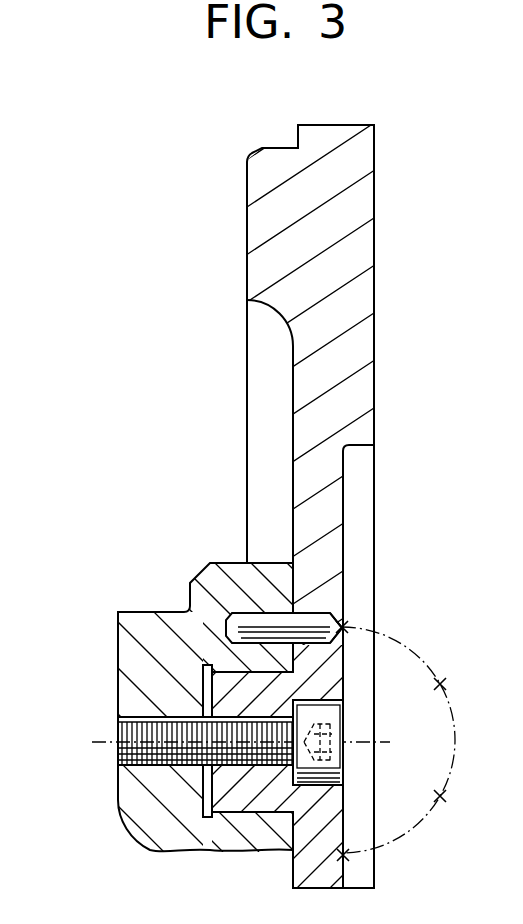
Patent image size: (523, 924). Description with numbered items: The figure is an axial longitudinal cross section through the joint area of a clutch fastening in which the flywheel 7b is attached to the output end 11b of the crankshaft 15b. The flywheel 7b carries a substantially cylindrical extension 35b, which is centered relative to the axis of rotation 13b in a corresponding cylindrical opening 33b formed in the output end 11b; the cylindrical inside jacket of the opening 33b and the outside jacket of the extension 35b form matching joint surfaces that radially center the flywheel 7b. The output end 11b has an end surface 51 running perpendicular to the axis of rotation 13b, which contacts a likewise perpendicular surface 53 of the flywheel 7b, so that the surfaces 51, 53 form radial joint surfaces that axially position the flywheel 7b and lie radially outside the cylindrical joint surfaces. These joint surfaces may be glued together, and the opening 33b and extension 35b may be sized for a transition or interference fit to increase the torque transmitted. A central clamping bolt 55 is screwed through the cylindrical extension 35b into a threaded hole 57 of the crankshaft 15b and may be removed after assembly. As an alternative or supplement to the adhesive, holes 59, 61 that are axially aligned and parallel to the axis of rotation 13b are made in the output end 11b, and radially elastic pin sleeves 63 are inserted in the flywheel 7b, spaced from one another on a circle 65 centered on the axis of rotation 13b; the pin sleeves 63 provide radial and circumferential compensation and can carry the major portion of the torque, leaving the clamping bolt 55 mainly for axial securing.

The flywheel 7b is at (362, 249).
The output end 11b is at (203, 581).
The axis of rotation 13b is at (98, 743).
The crankshaft 15b is at (132, 640).
The cylindrical opening 33b is at (238, 806).
The cylindrical extension 35b is at (253, 787).
The end surface 51 is at (295, 584).
The surface 53 is at (293, 466).
The central clamping bolt 55 is at (333, 722).
The threaded hole 57 is at (142, 762).
The hole 59 is at (251, 611).
The hole 61 is at (323, 605).
The radially elastic pin sleeve 63 is at (278, 612).
The circle 65 is at (401, 615).